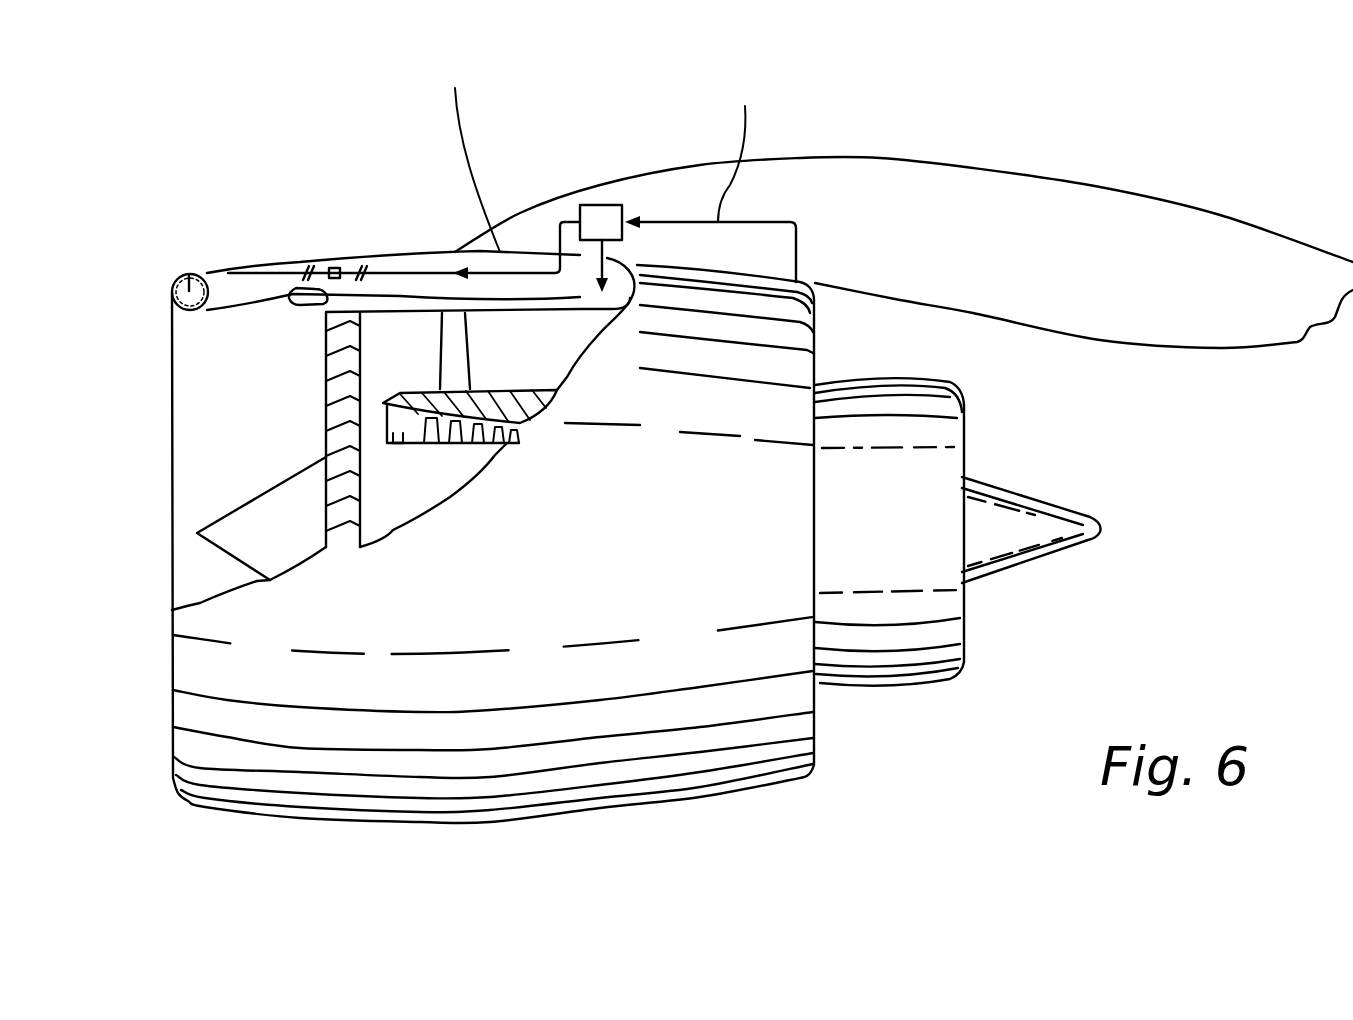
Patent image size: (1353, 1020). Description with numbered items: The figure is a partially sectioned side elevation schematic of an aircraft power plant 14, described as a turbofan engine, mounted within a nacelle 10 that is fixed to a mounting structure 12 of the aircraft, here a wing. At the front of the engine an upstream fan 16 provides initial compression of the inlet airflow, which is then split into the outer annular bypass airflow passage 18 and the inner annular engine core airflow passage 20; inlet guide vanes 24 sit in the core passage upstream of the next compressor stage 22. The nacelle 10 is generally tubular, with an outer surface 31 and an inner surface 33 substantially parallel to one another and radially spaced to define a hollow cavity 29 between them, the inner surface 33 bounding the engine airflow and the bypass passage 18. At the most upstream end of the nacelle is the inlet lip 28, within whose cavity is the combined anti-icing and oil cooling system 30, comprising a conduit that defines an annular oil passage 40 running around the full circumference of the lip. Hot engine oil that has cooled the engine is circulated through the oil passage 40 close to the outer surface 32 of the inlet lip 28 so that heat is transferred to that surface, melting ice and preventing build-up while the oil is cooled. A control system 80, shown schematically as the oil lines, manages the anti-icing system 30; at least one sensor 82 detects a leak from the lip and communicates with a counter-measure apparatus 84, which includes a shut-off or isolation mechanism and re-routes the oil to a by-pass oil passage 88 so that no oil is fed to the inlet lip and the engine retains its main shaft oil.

The nacelle 10 is at (490, 733).
The mounting structure 12 is at (973, 213).
The aircraft power plant 14 is at (272, 416).
The upstream fan 16 is at (345, 470).
The outer annular bypass airflow passage 18 is at (407, 353).
The inner annular engine core airflow passage 20 is at (425, 451).
The compressor stage 22 is at (507, 445).
The inlet guide vanes 24 is at (395, 445).
The inlet lip 28 is at (172, 340).
The hollow cavity 29 is at (279, 264).
The combined anti-icing and oil cooling system 30 is at (222, 264).
The outer surface 31 is at (320, 258).
The outer surface of the nacelle inlet lip 32 is at (158, 292).
The inner surface 33 is at (397, 317).
The annular oil passage 40 is at (189, 291).
The control system 80 is at (558, 180).
The sensor 82 is at (332, 277).
The counter-measure apparatus 84 is at (600, 205).
The by-pass oil passage 88 is at (640, 265).